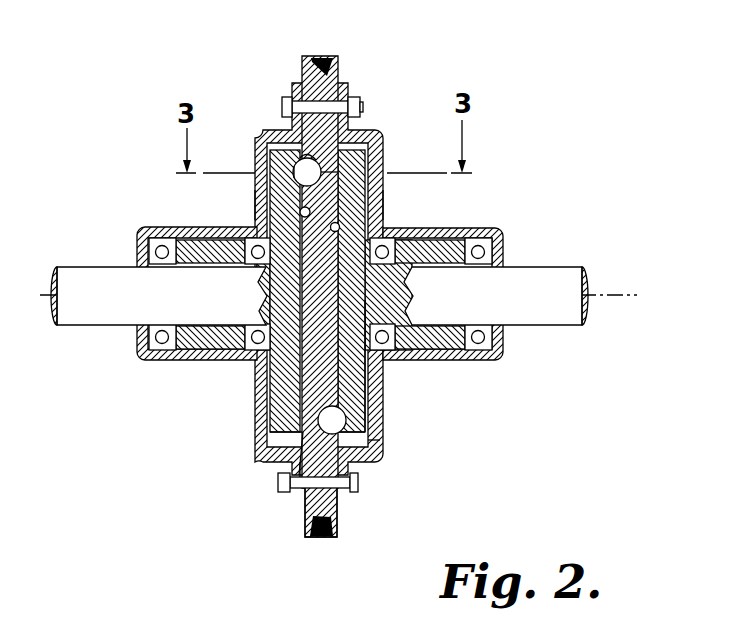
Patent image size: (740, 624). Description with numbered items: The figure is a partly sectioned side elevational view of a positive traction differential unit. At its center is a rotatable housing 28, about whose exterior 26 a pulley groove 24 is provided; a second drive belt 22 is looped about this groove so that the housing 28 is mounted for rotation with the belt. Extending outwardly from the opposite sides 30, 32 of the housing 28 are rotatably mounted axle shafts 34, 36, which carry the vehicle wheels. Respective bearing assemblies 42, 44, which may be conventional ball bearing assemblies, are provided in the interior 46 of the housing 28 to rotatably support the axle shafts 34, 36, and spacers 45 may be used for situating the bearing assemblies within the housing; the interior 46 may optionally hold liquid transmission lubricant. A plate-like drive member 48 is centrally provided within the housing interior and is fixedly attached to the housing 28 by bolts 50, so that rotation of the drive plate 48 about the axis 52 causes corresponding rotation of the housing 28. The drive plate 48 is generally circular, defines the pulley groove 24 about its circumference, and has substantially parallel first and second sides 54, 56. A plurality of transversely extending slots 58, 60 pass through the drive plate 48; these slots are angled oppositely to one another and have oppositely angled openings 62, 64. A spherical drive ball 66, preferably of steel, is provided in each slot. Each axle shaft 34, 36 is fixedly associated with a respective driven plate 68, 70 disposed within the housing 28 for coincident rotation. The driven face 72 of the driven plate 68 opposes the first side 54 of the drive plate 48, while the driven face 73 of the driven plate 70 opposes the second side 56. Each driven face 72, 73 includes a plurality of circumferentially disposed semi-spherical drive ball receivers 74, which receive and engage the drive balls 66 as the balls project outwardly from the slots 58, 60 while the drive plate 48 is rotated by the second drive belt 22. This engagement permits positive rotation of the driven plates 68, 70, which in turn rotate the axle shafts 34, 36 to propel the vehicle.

The second drive belt 22 is at (318, 56).
The pulley groove 24 is at (328, 66).
The exterior 26 is at (266, 78).
The housing 28 is at (373, 147).
The side 30 is at (256, 205).
The side 32 is at (384, 201).
The axle shaft 34 is at (112, 300).
The axle shaft 36 is at (540, 316).
The bearing assembly 42 is at (145, 358).
The bearing assembly 44 is at (500, 346).
The spacers 45 is at (200, 242).
The interior 46 is at (206, 348).
The drive member 48 is at (345, 473).
The bolts 50 is at (283, 105).
The axis 52 is at (603, 290).
The first side 54 is at (298, 404).
The second side 56 is at (370, 383).
The slot 58 is at (343, 172).
The slot 60 is at (300, 478).
The opening 62 is at (299, 163).
The opening 64 is at (303, 433).
The drive ball 66 is at (344, 178).
The driven plate 68 is at (282, 378).
The driven plate 70 is at (368, 432).
The driven face 72 is at (302, 211).
The driven face 73 is at (338, 228).
The drive ball receivers 74 is at (297, 173).